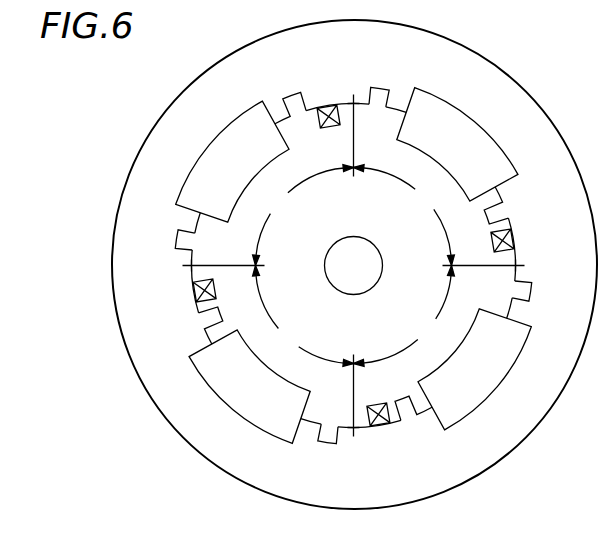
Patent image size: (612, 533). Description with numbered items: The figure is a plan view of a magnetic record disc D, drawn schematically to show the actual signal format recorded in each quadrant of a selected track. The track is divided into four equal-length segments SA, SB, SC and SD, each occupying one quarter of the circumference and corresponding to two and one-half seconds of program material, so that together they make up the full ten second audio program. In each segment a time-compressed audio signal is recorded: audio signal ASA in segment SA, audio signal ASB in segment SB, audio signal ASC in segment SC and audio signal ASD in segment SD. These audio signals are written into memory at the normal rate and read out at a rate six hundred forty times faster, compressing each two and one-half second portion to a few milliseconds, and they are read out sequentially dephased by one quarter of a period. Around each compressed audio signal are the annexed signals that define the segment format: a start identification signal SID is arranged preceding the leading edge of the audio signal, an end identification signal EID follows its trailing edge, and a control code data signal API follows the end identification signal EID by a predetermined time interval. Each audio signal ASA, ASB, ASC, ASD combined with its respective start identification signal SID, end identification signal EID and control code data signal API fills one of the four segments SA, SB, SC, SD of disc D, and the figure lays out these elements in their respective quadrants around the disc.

The magnetic record disc D is at (488, 82).
The audio signal of first segment ASA is at (457, 144).
The audio signal of second segment ASB is at (474, 369).
The audio signal of third segment ASC is at (249, 386).
The audio signal of fourth segment ASD is at (232, 161).
The end identification signal EID is at (288, 95).
The start identification signal SID is at (382, 93).
The control code data signal API is at (323, 103).
The first segment SA is at (399, 221).
The second segment SB is at (399, 311).
The third segment SC is at (309, 311).
The fourth segment SD is at (309, 221).